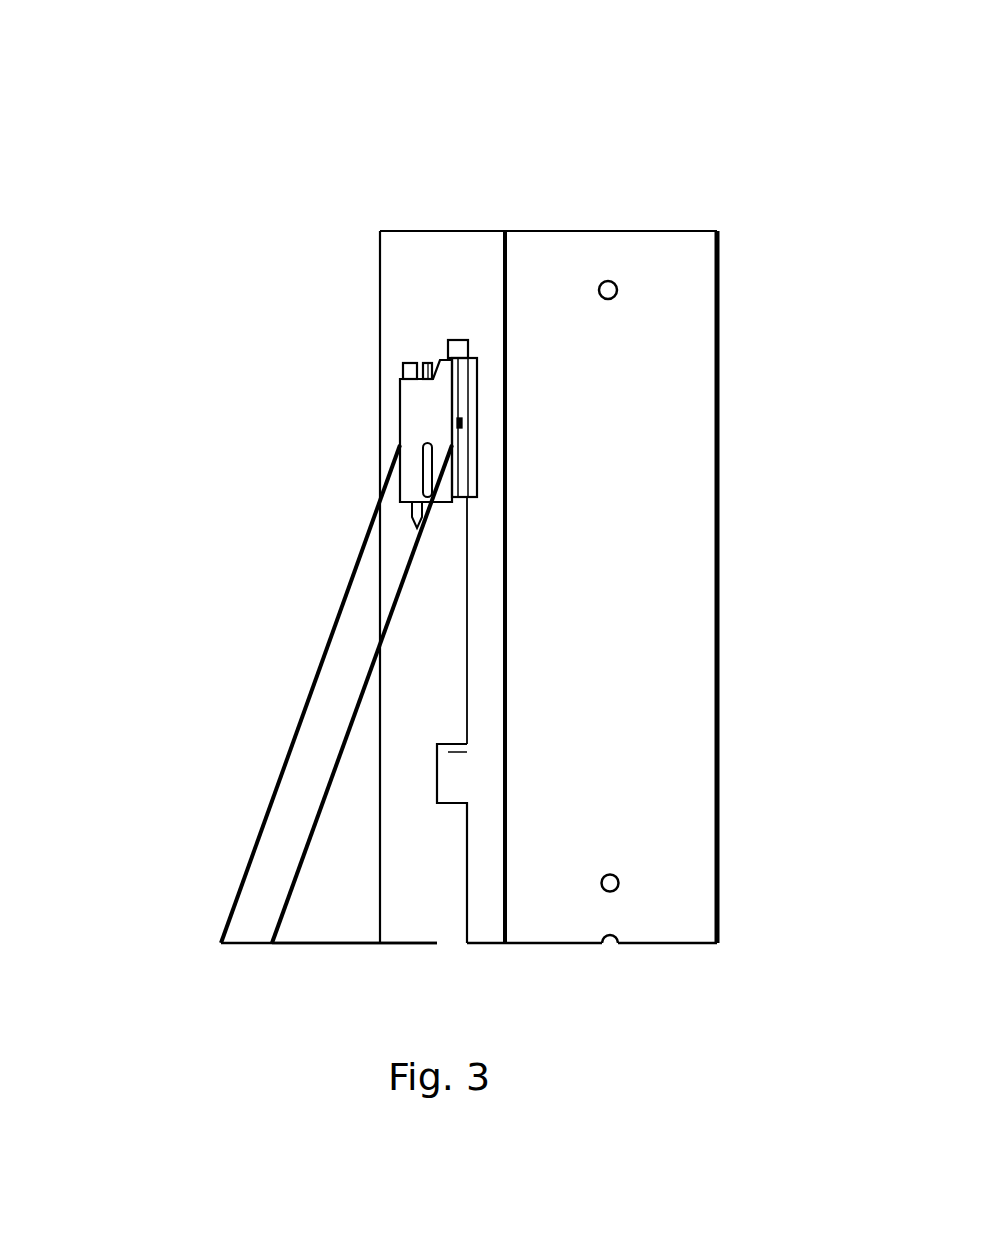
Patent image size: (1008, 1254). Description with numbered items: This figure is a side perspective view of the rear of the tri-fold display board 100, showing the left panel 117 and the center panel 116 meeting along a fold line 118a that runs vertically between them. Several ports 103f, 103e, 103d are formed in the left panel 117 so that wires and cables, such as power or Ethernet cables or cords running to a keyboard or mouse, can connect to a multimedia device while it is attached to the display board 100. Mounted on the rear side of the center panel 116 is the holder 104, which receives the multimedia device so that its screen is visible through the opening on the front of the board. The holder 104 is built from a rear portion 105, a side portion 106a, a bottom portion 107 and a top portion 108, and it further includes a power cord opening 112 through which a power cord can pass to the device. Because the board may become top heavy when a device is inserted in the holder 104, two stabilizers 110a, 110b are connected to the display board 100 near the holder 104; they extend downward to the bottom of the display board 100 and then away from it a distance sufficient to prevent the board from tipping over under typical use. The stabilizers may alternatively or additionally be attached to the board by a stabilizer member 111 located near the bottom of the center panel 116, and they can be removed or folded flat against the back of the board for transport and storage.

The tri-fold display board 100 is at (168, 155).
The center panel 116 is at (428, 267).
The fold line 118a is at (507, 253).
The left panel 117 is at (622, 545).
The port 103f is at (620, 280).
The port 103e is at (619, 883).
The port 103d is at (612, 947).
The holder 104 is at (340, 367).
The rear portion 105 is at (418, 390).
The top portion 108 is at (458, 348).
The side portion 106a is at (472, 444).
The power cord opening 112 is at (457, 425).
The bottom portion 107 is at (418, 523).
The stabilizer 110b is at (290, 812).
The stabilizer 110a is at (343, 885).
The stabilizer member 111 is at (453, 772).